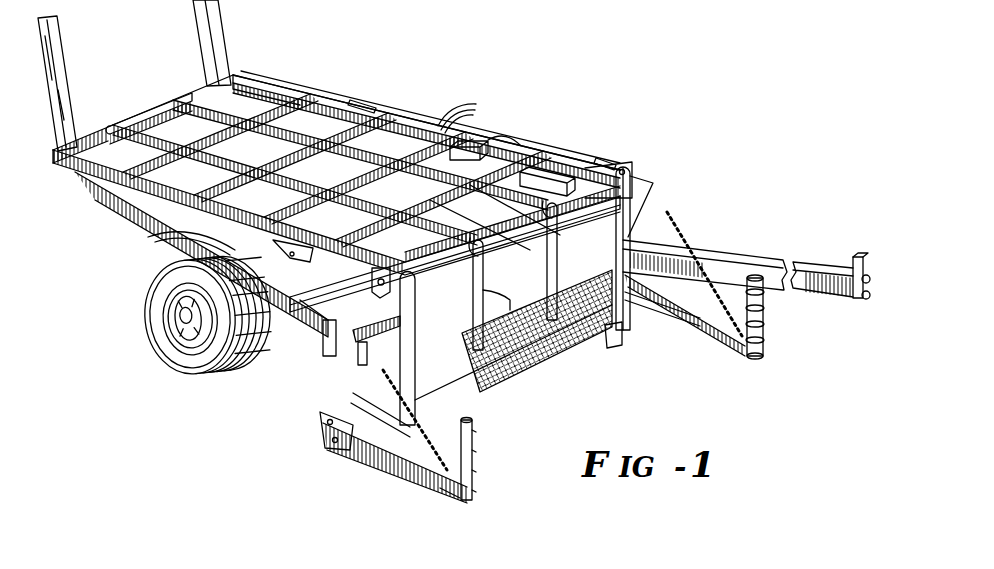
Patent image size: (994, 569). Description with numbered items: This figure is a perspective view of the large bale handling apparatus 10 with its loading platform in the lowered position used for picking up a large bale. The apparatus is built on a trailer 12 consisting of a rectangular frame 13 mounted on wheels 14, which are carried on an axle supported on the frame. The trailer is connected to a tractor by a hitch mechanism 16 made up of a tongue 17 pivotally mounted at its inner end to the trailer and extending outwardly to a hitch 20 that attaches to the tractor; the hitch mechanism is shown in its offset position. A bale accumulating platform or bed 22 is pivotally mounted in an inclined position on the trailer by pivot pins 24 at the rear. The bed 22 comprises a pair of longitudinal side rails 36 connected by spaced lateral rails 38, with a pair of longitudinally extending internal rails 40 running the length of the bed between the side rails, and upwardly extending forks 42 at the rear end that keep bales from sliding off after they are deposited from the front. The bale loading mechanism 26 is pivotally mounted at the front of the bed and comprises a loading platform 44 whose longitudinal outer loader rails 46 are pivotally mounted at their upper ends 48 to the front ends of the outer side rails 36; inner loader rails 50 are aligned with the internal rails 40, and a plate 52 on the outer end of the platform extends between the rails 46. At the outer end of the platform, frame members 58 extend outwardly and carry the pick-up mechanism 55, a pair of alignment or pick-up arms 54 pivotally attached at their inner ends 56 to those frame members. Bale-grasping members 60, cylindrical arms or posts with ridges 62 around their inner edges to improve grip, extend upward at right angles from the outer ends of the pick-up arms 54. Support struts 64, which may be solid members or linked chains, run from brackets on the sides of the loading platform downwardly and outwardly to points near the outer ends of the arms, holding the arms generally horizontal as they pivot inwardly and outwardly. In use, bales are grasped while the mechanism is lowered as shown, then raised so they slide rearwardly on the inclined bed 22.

The large bale handling apparatus 10 is at (250, 415).
The trailer 12 is at (148, 205).
The frame 13 is at (318, 312).
The wheels 14 is at (152, 292).
The hitch mechanism 16 is at (751, 251).
The tongue 17 is at (810, 275).
The hitch 20 is at (861, 272).
The bale accumulating platform or bed 22 is at (565, 152).
The pivot pins 24 is at (108, 180).
The bale loading mechanism 26 is at (532, 378).
The longitudinal side rails 36 is at (160, 238).
The lateral rails 38 is at (368, 106).
The internal rails 40 is at (158, 92).
The forks 42 is at (62, 40).
The loading platform 44 is at (552, 340).
The outer loader rails 46 is at (418, 340).
The upper ends 48 is at (632, 176).
The inner loader rails 50 is at (505, 298).
The plate 52 is at (606, 330).
The pick-up arms 54 is at (720, 335).
The pick-up mechanism 55 is at (433, 485).
The inner ends 56 is at (336, 448).
The frame members 58 is at (660, 306).
The bale-grasping members 60 is at (765, 312).
The ridges 62 is at (764, 338).
The support struts 64 is at (676, 232).